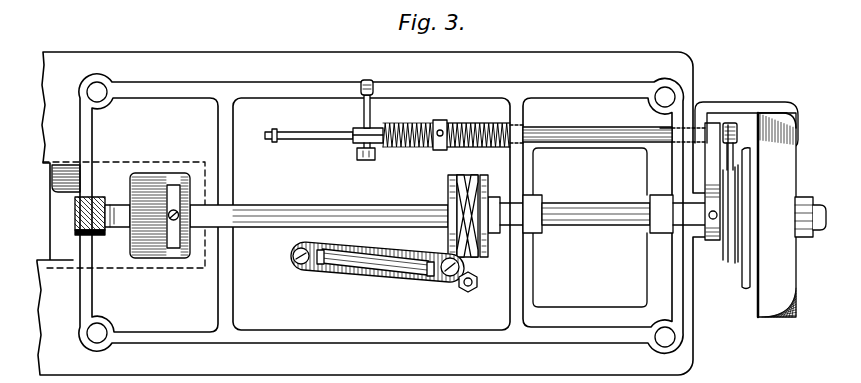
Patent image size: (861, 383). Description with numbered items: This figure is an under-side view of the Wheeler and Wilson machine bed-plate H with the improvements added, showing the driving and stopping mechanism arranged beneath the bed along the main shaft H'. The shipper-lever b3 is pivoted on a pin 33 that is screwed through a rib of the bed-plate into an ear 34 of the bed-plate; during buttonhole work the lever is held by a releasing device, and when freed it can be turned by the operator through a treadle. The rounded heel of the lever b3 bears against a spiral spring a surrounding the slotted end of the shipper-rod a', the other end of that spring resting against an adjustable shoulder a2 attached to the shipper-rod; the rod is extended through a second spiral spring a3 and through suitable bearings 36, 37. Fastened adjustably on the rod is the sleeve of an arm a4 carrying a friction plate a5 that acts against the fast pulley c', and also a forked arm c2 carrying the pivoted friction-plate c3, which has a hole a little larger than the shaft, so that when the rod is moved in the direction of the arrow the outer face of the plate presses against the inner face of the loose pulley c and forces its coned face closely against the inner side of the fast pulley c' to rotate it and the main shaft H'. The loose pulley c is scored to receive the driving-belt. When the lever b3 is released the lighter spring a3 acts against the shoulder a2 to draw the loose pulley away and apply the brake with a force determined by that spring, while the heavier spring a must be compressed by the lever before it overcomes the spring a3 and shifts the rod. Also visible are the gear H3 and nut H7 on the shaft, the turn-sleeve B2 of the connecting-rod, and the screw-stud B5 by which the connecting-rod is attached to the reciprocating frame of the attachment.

The housing or frame plate H is at (372, 213).
The main shaft H' is at (390, 224).
The bevel gear on shaft H3 is at (448, 190).
The nut H7 is at (464, 291).
The screw-stud B5 is at (312, 280).
The turn-sleeve B2 is at (392, 277).
The shipper-lever b3 is at (324, 129).
The pin 33 is at (364, 113).
The ear 34 is at (357, 156).
The spring a is at (446, 144).
The collar a2 is at (440, 150).
The spring portion a3 is at (478, 123).
The bearing 36 is at (522, 124).
The rod a' is at (615, 125).
The bearing 37 is at (668, 130).
The bracket a4 is at (745, 103).
The bracket end a5 is at (799, 140).
The loose pulley c is at (738, 143).
The fast pulley c' is at (763, 215).
The knurled knob c2 is at (711, 166).
The spring plate c3 is at (743, 280).